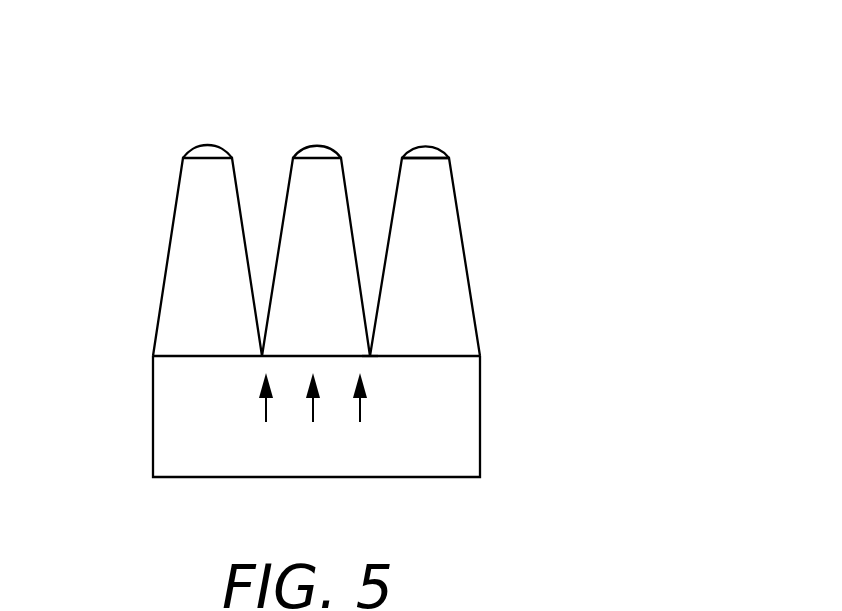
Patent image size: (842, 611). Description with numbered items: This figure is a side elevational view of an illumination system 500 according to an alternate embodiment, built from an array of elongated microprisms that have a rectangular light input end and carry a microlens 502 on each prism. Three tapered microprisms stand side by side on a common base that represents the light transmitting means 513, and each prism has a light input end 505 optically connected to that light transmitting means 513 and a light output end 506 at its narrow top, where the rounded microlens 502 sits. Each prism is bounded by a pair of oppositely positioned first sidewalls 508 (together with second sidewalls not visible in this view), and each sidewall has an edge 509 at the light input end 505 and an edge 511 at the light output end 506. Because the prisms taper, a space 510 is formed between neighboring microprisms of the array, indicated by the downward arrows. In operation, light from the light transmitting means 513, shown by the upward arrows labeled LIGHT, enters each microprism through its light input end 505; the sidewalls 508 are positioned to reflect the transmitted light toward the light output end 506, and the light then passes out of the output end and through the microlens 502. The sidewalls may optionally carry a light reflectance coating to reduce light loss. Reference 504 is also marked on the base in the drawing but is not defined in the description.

The illumination system 500 is at (530, 255).
The microlens 502 is at (427, 145).
The substrate 504 is at (213, 340).
The light input end 505 is at (453, 355).
The light output end 506 is at (202, 148).
The first sidewalls 508 is at (243, 228).
The edge 509 is at (370, 357).
The space 510 is at (265, 182).
The edge 511 is at (445, 158).
The light transmitting means 513 is at (458, 452).